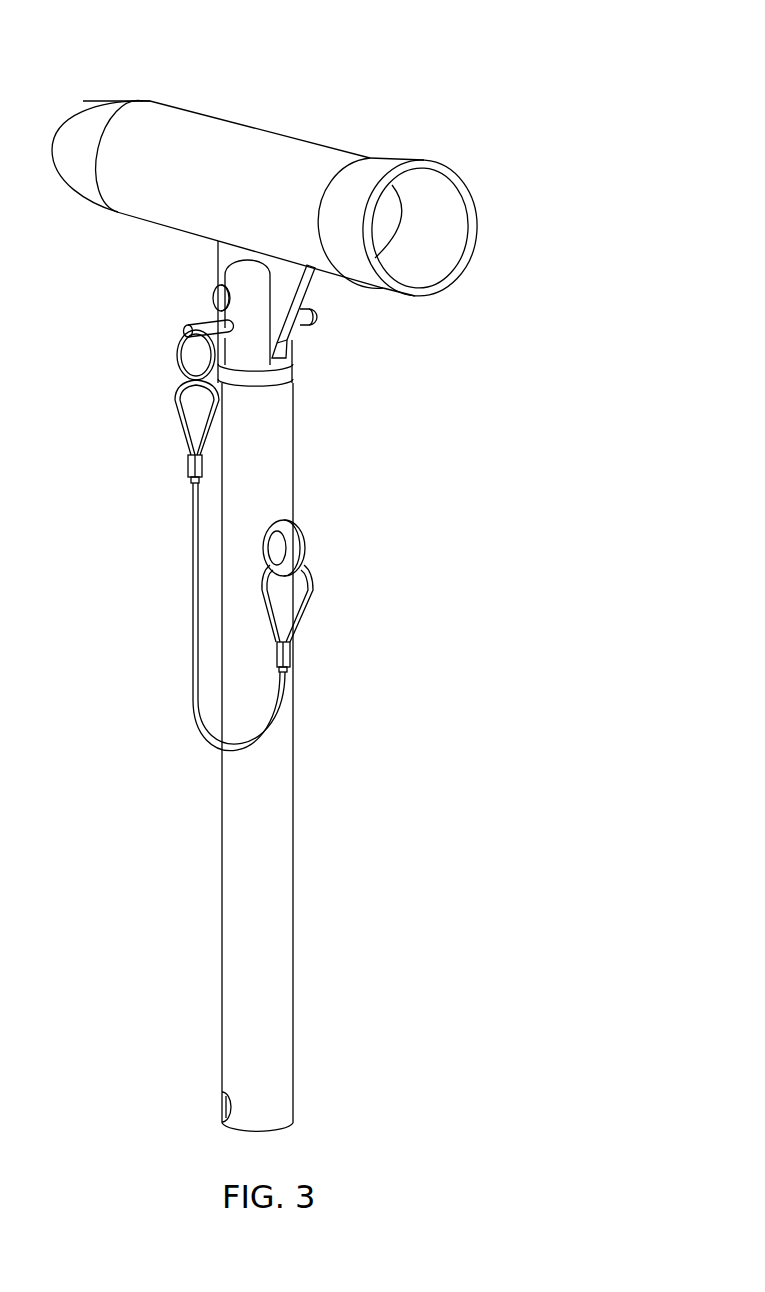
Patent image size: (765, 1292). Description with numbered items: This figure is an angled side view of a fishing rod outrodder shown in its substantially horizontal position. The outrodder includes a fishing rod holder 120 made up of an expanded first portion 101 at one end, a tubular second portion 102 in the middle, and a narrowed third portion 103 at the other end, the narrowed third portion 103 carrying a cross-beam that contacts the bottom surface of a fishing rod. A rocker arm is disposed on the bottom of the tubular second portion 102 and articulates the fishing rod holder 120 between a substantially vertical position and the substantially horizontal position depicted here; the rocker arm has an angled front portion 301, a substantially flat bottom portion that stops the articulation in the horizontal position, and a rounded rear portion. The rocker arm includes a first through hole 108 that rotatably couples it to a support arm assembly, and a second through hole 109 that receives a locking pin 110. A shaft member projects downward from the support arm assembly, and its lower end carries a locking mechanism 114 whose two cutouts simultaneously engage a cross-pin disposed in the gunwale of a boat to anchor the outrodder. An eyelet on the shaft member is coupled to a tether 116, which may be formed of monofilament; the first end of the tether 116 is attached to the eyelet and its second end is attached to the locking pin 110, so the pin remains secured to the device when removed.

The expanded first portion 101 is at (370, 173).
The tubular second portion 102 is at (263, 170).
The narrowed third portion 103 is at (85, 124).
The fishing rod holder 120 is at (220, 117).
The first through hole 108 is at (210, 297).
The second through hole 109 is at (232, 335).
The locking pin 110 is at (310, 327).
The angled front portion 301 is at (307, 290).
The tether 116 is at (193, 582).
The locking mechanism 114 is at (235, 1107).